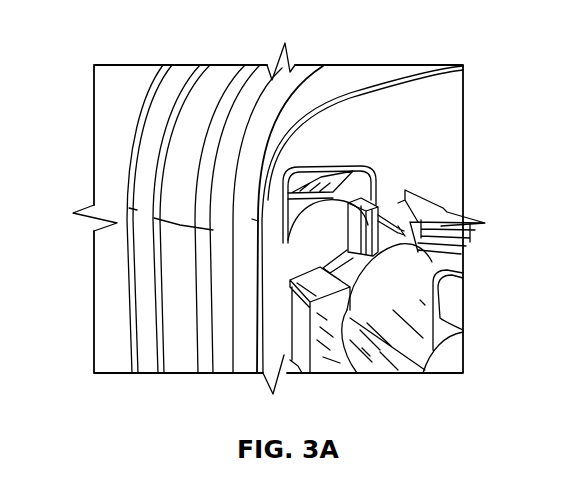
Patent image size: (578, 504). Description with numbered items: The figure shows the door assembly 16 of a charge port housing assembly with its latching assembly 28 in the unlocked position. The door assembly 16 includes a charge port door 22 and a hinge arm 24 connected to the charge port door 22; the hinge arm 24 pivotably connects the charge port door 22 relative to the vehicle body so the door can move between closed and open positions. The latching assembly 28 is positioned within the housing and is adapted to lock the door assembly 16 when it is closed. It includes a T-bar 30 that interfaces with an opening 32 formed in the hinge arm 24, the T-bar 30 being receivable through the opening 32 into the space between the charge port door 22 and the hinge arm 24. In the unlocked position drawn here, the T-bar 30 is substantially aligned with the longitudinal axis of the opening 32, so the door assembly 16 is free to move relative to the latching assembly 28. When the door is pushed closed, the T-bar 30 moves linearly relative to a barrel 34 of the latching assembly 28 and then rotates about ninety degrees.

The door assembly 16 is at (126, 149).
The charge port door 22 is at (293, 78).
The hinge arm 24 is at (448, 117).
The latching assembly 28 is at (428, 266).
The T-bar 30 is at (298, 207).
The opening 32 is at (341, 227).
The barrel 34 is at (377, 205).